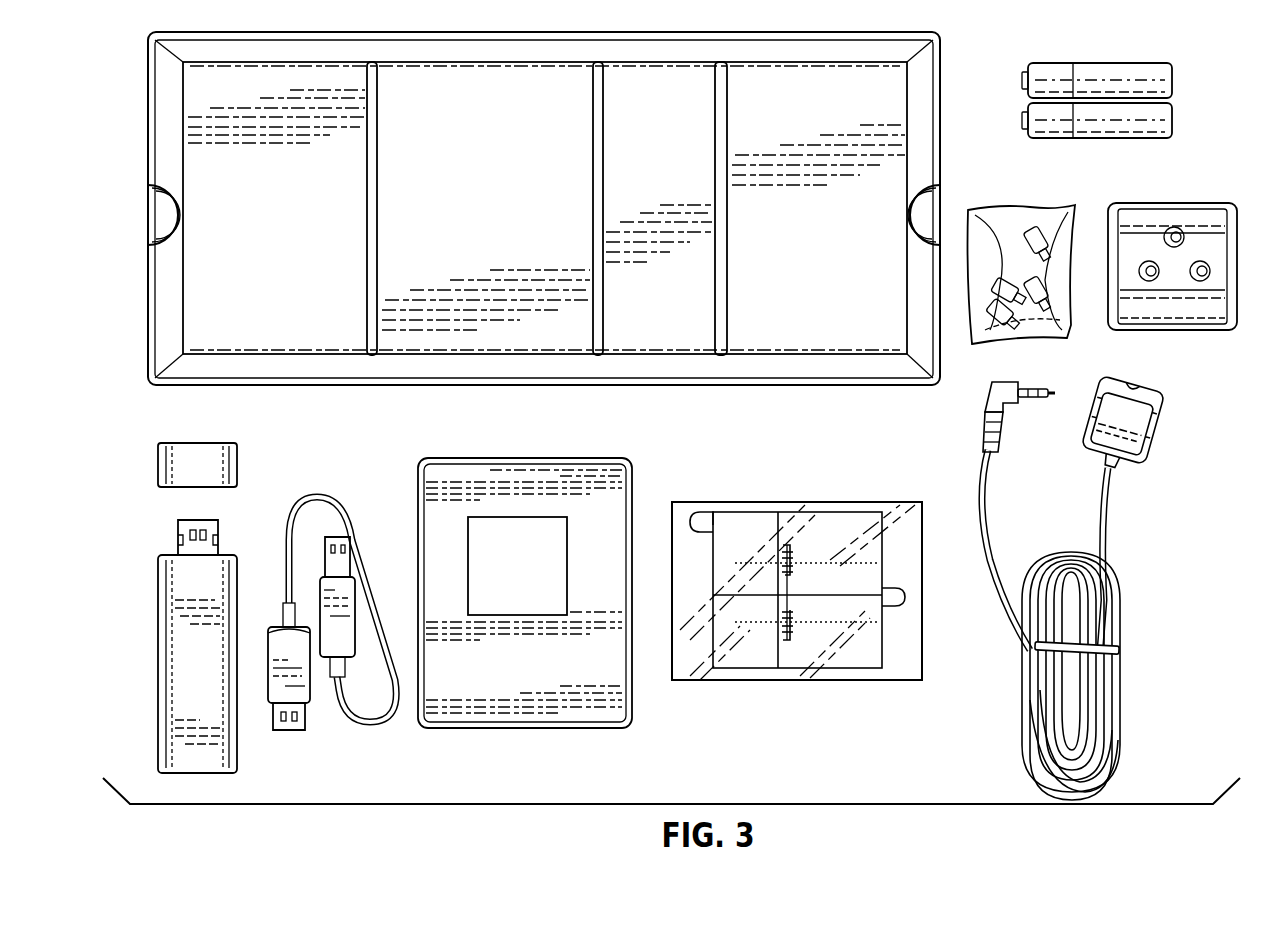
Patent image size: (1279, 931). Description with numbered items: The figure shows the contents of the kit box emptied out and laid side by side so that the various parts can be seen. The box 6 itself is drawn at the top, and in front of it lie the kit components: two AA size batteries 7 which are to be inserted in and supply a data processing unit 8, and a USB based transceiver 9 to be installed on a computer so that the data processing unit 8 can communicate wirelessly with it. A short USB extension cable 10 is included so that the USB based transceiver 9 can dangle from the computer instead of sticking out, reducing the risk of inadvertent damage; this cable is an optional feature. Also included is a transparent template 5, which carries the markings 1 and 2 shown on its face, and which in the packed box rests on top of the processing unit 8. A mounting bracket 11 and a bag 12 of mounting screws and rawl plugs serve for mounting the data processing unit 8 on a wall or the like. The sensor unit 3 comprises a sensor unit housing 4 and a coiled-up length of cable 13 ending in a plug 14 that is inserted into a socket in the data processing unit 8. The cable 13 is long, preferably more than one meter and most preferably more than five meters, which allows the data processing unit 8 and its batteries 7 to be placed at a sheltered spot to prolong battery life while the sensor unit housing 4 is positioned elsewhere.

The first electrode 1 is at (701, 523).
The second electrode 2 is at (809, 596).
The sensor unit 3 is at (1098, 575).
The sensor unit housing 4 is at (1165, 412).
The template 5 is at (797, 631).
The storage case 6 is at (148, 118).
The AA size batteries 7 is at (1172, 80).
The data processing unit 8 is at (497, 728).
The USB based transceiver 9 is at (237, 758).
The USB extension cable 10 is at (360, 722).
The mounting bracket 11 is at (1196, 234).
The bag 12 is at (1028, 230).
The cable 13 is at (995, 565).
The plug 14 is at (1018, 384).